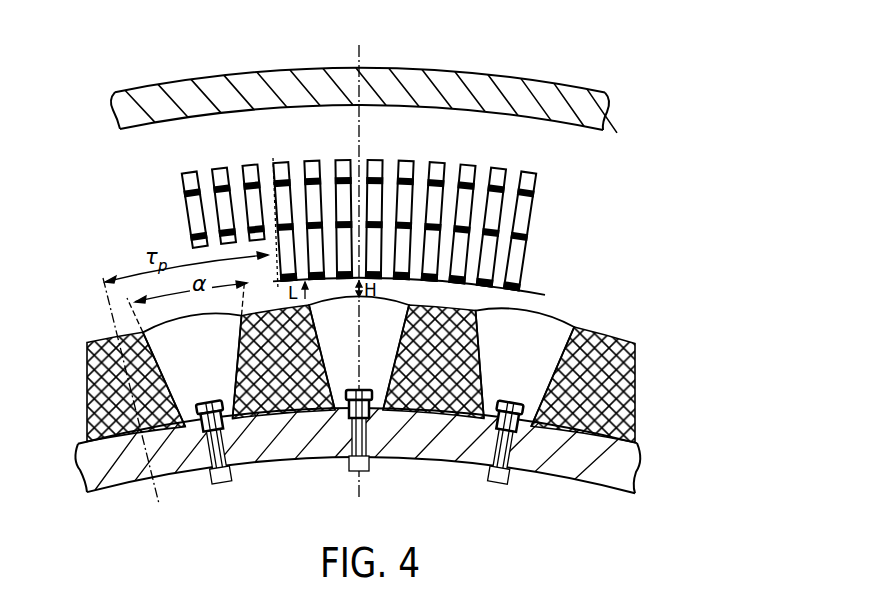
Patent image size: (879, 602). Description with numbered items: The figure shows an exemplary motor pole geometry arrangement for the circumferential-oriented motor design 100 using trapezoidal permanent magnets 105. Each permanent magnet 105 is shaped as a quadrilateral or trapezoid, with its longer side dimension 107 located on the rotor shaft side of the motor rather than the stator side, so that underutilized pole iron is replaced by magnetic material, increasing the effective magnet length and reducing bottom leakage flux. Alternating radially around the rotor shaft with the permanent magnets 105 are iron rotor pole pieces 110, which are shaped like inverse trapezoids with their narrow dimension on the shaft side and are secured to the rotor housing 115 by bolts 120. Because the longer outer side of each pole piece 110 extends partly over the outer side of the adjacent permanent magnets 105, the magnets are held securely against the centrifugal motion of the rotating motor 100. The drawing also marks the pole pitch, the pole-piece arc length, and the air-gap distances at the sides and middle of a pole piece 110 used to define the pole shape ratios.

The circumferential-oriented motor design 100 is at (529, 58).
The permanent magnet 105 is at (90, 393).
The longer side dimension 107 is at (640, 448).
The iron rotor pole piece 110 is at (388, 368).
The rotor housing 115 is at (637, 491).
The bolt 120 is at (515, 450).